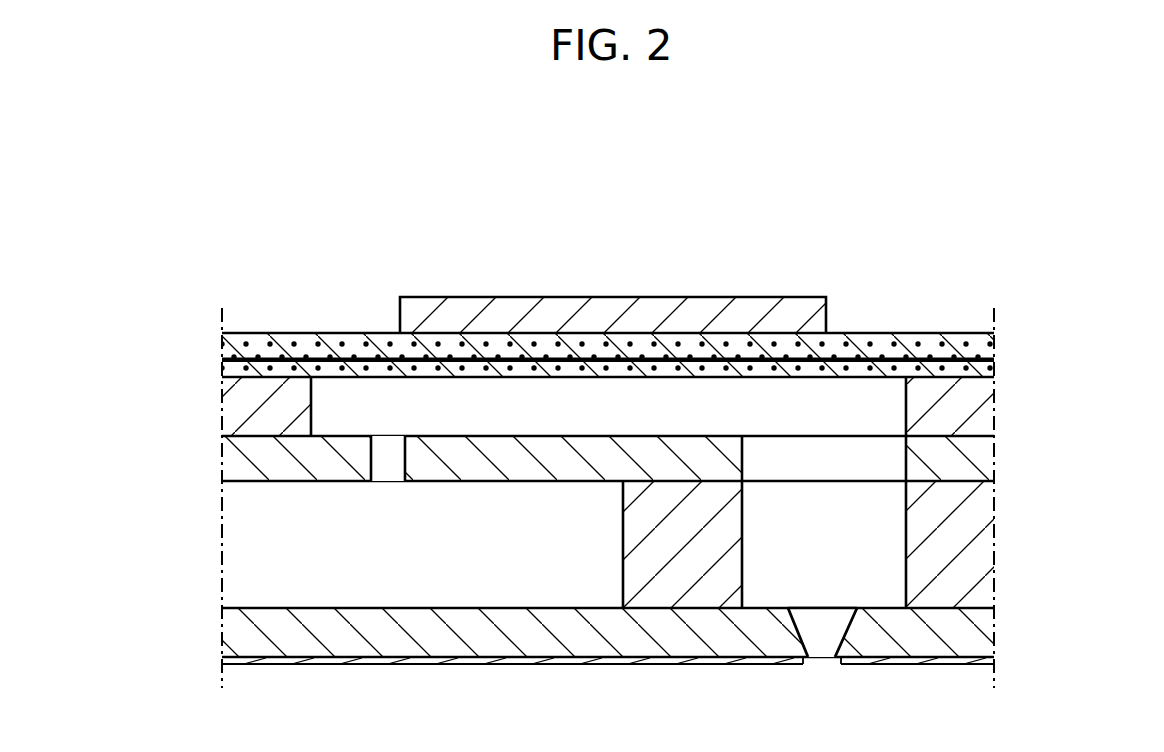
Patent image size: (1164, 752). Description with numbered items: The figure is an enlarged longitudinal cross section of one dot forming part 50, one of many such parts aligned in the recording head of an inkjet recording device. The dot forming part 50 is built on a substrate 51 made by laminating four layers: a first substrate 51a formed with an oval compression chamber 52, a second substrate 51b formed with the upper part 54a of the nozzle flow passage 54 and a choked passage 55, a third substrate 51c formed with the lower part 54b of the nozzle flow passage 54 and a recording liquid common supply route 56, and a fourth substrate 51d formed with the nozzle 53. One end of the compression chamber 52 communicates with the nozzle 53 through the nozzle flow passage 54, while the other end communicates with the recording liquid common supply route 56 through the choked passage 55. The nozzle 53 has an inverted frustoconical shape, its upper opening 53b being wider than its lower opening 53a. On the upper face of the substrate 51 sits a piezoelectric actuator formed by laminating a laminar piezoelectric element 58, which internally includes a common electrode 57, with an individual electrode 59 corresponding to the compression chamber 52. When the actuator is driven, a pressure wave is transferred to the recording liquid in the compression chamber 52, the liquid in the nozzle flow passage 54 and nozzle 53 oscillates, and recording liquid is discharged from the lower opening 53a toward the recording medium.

The dot forming part 50 is at (760, 184).
The substrate 51 is at (1098, 385).
The first substrate 51a is at (980, 404).
The second substrate 51b is at (980, 459).
The third substrate 51c is at (980, 539).
The fourth substrate 51d is at (980, 629).
The compression chamber 52 is at (375, 395).
The nozzle 53 is at (816, 632).
The lower opening 53a is at (820, 662).
The upper opening 53b is at (826, 606).
The nozzle flow passage 54 is at (973, 275).
The upper part of the nozzle flow passage 54a is at (812, 452).
The lower part of the nozzle flow passage 54b is at (835, 495).
The choked passage 55 is at (388, 490).
The recording liquid common supply route 56 is at (440, 588).
The common electrode 57 is at (258, 356).
The laminar piezoelectric element 58 is at (286, 343).
The individual electrode 59 is at (650, 308).